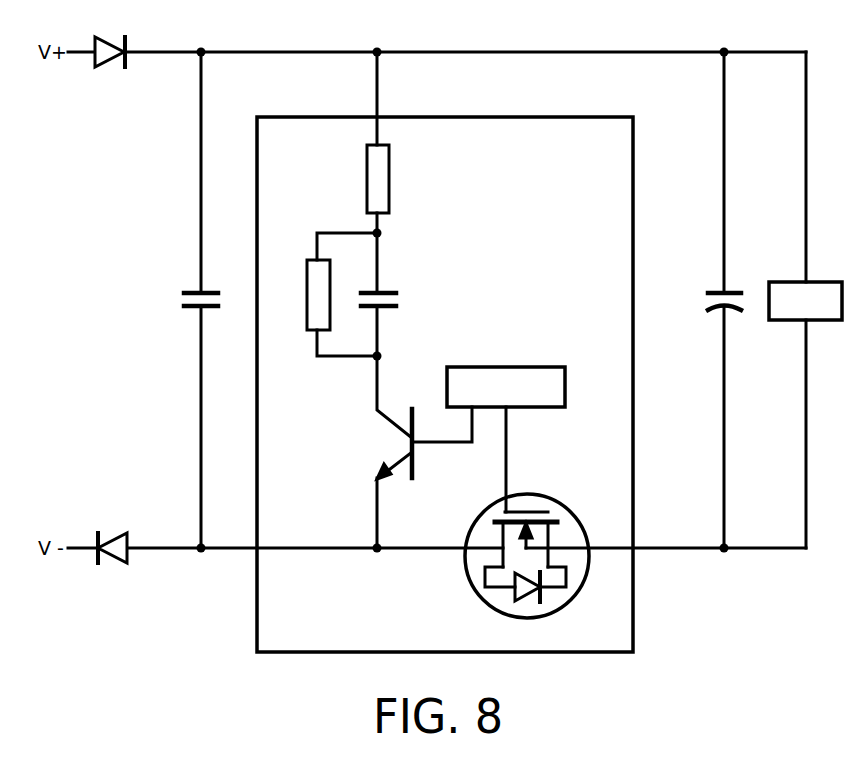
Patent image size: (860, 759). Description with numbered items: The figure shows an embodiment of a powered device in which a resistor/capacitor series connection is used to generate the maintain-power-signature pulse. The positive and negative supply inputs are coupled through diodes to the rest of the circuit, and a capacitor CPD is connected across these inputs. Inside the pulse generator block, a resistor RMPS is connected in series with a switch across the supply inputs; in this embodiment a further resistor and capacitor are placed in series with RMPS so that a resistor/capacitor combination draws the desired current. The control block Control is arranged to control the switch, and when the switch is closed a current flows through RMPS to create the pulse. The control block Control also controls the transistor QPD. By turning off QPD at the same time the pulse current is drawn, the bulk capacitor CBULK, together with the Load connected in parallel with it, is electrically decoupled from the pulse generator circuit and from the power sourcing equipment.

The resistor RMPS is at (407, 142).
The capacitor CPD is at (183, 300).
The bulk capacitor CBULK is at (696, 300).
The switch transistor QPD is at (535, 563).
The control block Control is at (506, 439).
The load Load is at (805, 301).